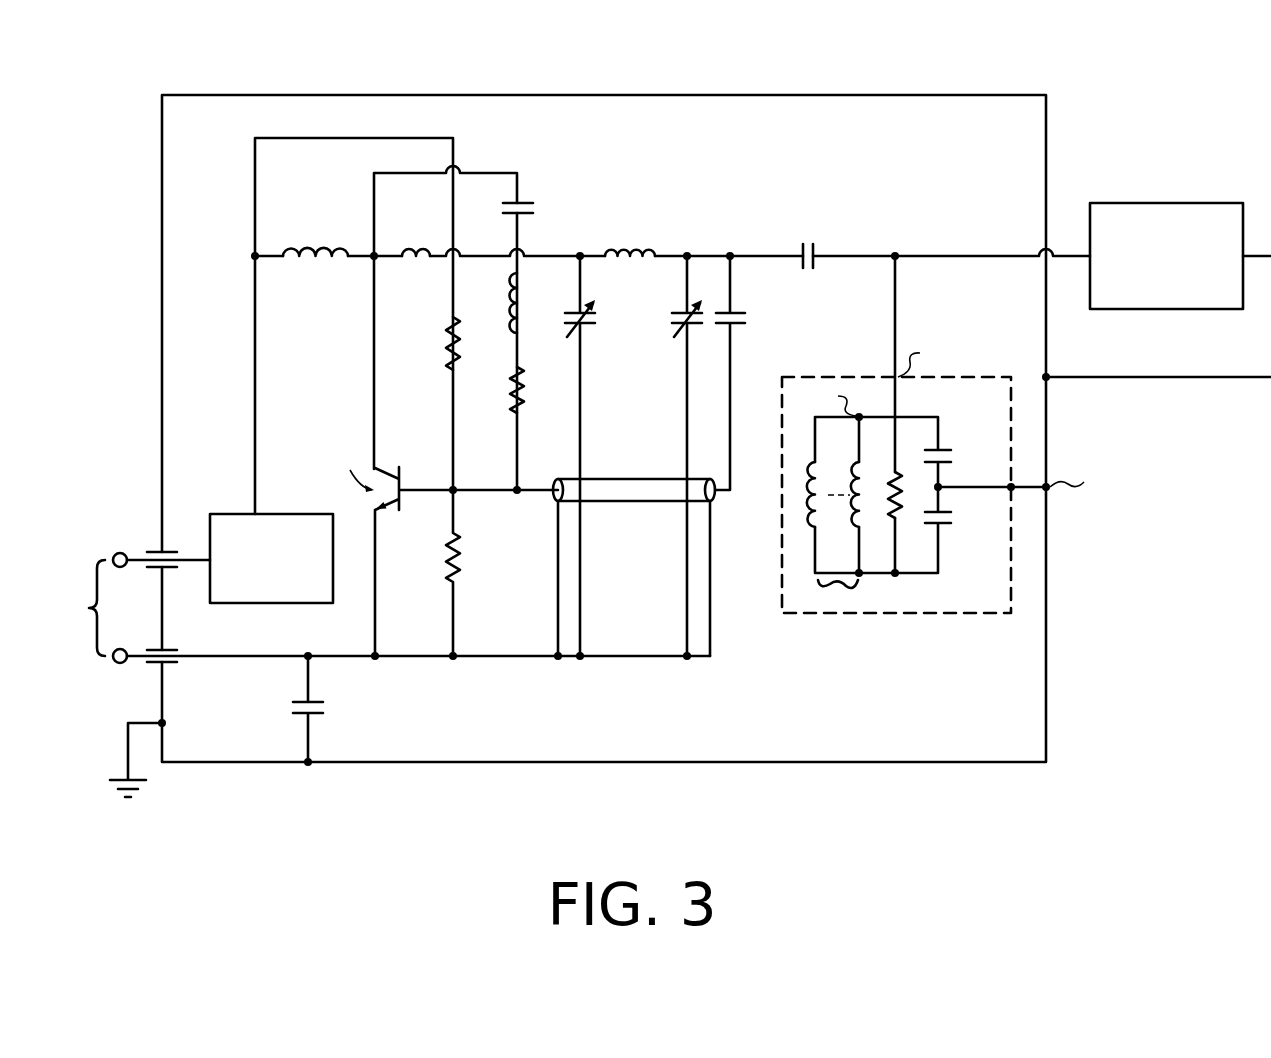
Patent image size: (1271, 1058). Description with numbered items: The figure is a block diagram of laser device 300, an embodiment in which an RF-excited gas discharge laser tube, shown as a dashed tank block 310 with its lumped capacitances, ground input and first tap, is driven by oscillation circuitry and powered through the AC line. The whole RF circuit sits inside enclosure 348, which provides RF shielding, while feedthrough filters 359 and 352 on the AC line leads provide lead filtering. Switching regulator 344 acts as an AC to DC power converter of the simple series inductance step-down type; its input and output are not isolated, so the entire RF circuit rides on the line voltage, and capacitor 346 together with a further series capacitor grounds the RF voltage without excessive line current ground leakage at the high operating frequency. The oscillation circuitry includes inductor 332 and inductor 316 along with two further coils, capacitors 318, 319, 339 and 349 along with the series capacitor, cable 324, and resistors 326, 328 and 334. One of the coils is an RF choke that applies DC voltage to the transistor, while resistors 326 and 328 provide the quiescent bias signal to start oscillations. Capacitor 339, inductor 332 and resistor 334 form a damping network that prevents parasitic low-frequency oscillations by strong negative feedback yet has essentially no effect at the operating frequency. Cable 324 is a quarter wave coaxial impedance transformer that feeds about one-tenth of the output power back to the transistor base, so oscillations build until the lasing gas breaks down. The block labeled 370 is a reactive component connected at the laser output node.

The laser device 300 is at (617, 38).
The resonant tank circuit 310 is at (892, 614).
The inductor 316 is at (622, 248).
The capacitor 318 is at (592, 330).
The capacitor 319 is at (681, 310).
The cable 324 is at (606, 504).
The resistor 326 is at (462, 546).
The resistor 328 is at (448, 367).
The inductor 332 is at (537, 303).
The resistor 334 is at (512, 395).
The capacitor 339 is at (534, 203).
The switching regulator 344 is at (282, 513).
The capacitor 346 is at (322, 714).
The enclosure 348 is at (716, 764).
The capacitor 349 is at (742, 330).
The filter 352 is at (178, 666).
The filter 359 is at (152, 550).
The reactive component 370 is at (1140, 203).